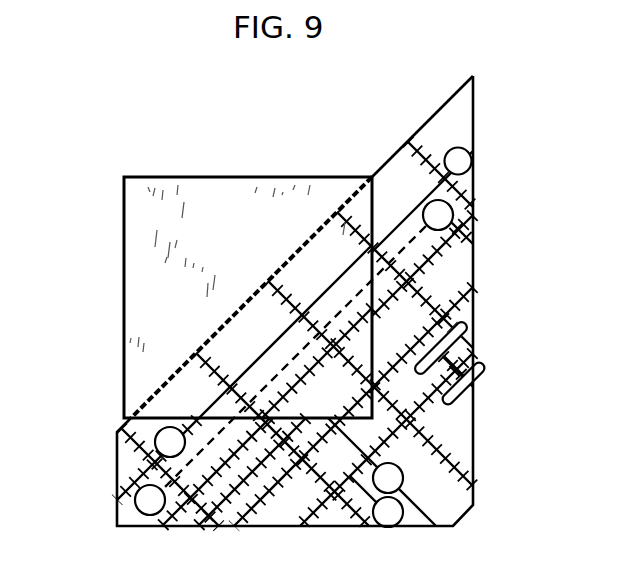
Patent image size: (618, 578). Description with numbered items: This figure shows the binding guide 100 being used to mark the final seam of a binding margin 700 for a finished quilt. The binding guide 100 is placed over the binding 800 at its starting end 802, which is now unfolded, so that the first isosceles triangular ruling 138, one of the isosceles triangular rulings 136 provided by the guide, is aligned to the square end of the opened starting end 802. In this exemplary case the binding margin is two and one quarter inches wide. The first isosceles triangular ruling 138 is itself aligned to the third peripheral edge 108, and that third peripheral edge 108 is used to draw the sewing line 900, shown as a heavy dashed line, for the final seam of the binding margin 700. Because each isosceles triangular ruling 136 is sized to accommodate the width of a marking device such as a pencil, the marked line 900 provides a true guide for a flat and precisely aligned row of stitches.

The binding guide 100 is at (348, 284).
The third peripheral edge 108 is at (430, 113).
The isosceles triangular ruling 136 is at (454, 280).
The first isosceles triangular ruling 138 is at (383, 335).
The binding margin 700 is at (205, 265).
The fabric square 800 is at (205, 297).
The starting end 802 is at (118, 275).
The sewing line 900 is at (196, 342).